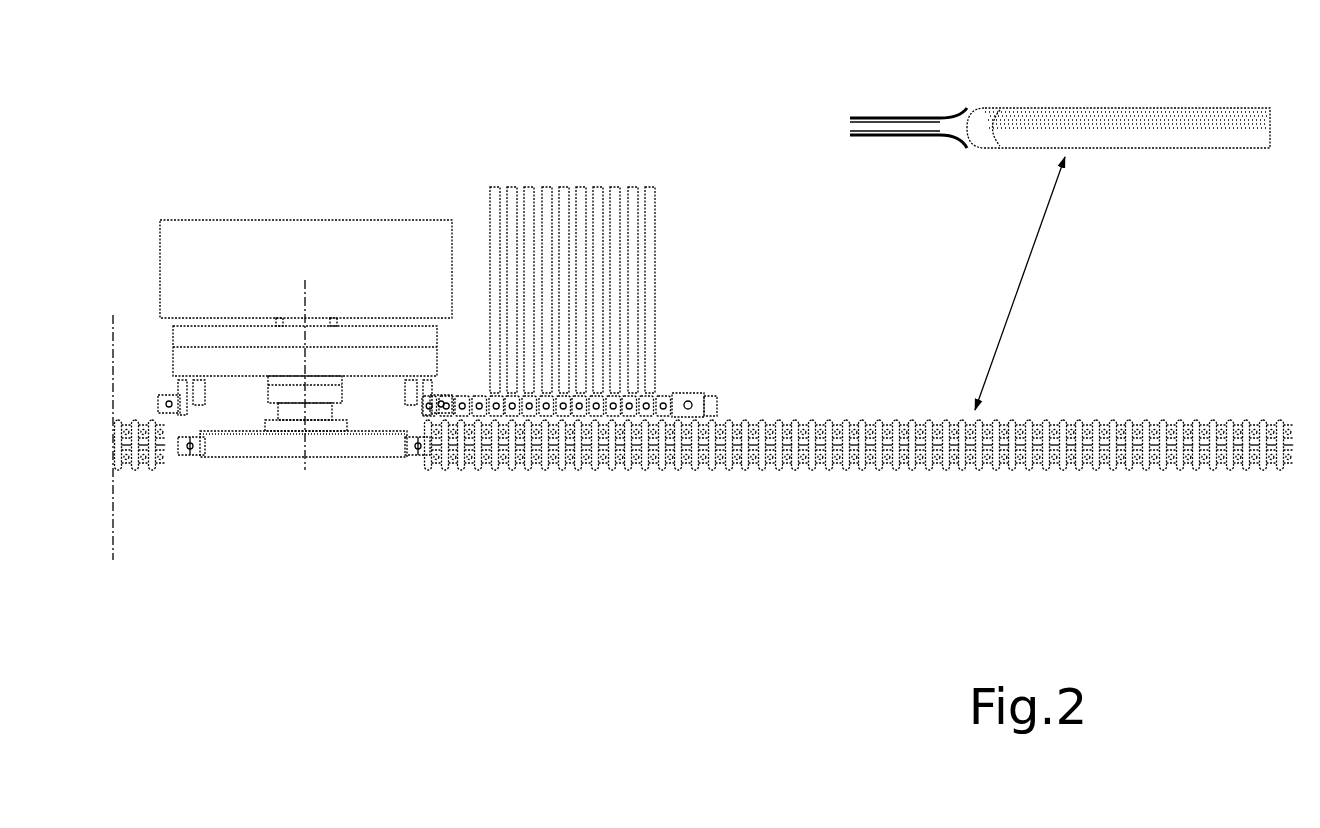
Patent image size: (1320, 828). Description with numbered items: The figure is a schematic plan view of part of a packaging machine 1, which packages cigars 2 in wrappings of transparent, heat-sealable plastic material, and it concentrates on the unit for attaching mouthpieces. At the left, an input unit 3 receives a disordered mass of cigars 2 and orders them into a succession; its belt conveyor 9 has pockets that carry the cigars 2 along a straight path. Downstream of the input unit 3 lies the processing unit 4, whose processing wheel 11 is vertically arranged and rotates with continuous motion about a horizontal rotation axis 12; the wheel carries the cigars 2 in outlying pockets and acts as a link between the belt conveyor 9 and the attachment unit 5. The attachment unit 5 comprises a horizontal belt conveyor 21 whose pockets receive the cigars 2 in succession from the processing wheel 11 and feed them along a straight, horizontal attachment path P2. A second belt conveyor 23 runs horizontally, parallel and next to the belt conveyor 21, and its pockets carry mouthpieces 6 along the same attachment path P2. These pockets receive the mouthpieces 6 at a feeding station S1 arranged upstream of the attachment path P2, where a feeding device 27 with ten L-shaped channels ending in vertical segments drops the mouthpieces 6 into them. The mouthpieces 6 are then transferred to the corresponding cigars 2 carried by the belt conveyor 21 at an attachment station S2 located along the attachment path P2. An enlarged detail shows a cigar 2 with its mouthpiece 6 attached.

The packaging machine 1 is at (240, 634).
The cigars 2 is at (1143, 108).
The input unit 3 is at (130, 292).
The processing unit 4 is at (300, 136).
The attachment unit 5 is at (621, 212).
The mouthpieces 6 is at (893, 116).
The belt conveyor 9 is at (168, 487).
The processing wheel 11 is at (376, 448).
The rotation axis 12 is at (307, 283).
The belt conveyor 21 is at (612, 502).
The belt conveyor 23 is at (736, 403).
The feeding device 27 is at (672, 264).
The feeding station S1 is at (576, 385).
The attachment station S2 is at (558, 438).
The attachment path P2 is at (682, 445).